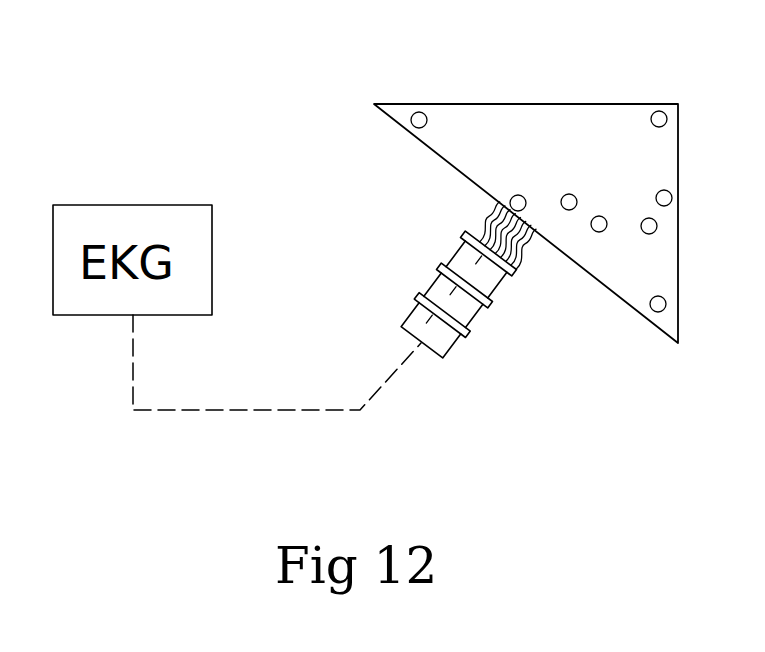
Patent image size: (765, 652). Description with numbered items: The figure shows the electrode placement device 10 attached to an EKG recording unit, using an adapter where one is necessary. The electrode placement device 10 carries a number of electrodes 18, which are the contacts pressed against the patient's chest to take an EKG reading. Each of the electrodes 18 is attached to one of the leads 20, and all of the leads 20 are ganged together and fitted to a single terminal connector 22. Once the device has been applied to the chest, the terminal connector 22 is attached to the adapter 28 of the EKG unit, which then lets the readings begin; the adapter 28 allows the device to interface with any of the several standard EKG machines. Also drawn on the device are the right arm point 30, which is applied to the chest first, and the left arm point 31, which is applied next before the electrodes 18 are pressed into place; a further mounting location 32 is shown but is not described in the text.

The electrode placement device 10 is at (600, 263).
The electrodes 18 is at (643, 224).
The leads 20 is at (487, 216).
The terminal connector 22 is at (490, 280).
The adapter 28 is at (470, 313).
The right arm point 30 is at (418, 113).
The left arm point 31 is at (657, 112).
The mounting hole 32 is at (657, 311).